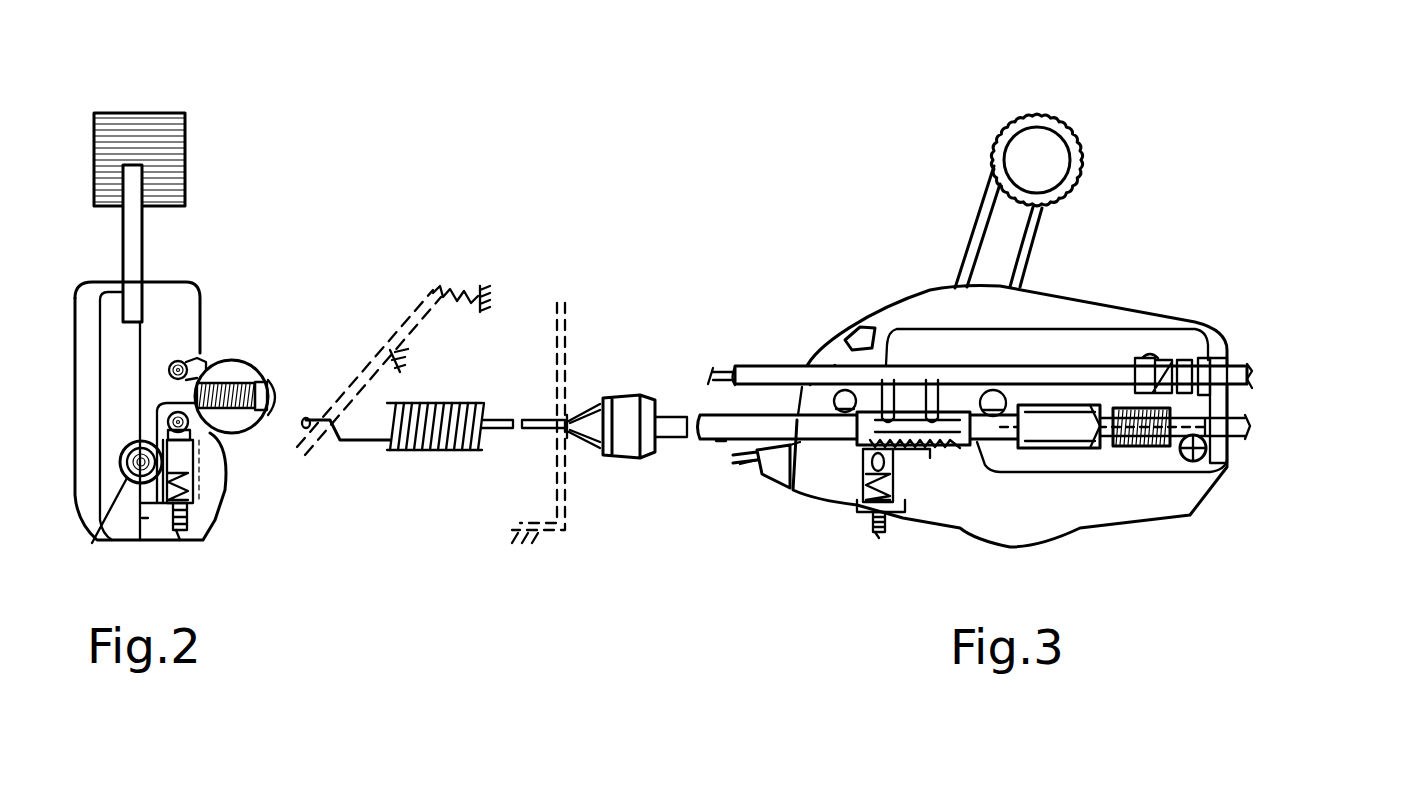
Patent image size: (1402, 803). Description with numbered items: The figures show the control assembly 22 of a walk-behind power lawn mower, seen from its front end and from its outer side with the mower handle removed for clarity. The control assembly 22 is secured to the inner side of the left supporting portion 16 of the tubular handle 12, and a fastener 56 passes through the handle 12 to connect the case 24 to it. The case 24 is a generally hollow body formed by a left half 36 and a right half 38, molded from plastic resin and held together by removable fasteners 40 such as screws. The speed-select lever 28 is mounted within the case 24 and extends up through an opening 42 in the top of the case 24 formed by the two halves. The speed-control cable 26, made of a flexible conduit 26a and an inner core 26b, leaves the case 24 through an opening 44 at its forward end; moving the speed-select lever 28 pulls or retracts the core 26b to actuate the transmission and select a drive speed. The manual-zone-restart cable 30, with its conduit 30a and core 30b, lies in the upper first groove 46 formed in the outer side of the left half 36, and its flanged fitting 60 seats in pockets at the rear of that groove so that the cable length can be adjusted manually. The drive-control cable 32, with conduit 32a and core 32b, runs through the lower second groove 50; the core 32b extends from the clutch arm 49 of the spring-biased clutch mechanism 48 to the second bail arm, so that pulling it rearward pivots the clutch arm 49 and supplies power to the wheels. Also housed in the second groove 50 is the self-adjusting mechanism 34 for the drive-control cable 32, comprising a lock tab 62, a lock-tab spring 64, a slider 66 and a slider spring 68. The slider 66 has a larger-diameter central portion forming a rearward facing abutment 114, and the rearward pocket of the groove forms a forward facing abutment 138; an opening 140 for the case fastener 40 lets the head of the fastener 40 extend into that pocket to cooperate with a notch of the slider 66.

In FIG. 2, the tubular handle 12 is at (262, 437).
In FIG. 2, the supporting portion 16 is at (256, 364).
In FIG. 3, the control assembly 22 is at (850, 203).
In FIG. 2, the case 24 is at (192, 276).
In FIG. 3, the case 24 is at (1177, 560).
In FIG. 2, the speed-control cable 26 is at (135, 482).
In FIG. 3, the speed-control cable 26 is at (766, 492).
In FIG. 3, the speed-control cable conduit 26a is at (772, 478).
In FIG. 3, the speed-control cable core 26b is at (748, 462).
In FIG. 2, the speed-select lever 28 is at (156, 112).
In FIG. 3, the speed-select lever 28 is at (975, 203).
In FIG. 2, the manual-zone-restart cable 30 is at (190, 338).
In FIG. 3, the manual-zone-restart cable 30 is at (786, 362).
In FIG. 3, the MRZ cable conduit 30a is at (750, 365).
In FIG. 3, the MRZ cable core 30b is at (722, 372).
In FIG. 2, the drive-control cable 32 is at (169, 370).
In FIG. 3, the drive-control cable 32 is at (705, 447).
In FIG. 3, the drive-control cable conduit 32a is at (721, 442).
In FIG. 3, the drive-control cable core 32b is at (552, 430).
In FIG. 2, the self-adjusting mechanism 34 is at (187, 532).
In FIG. 3, the self-adjusting mechanism 34 is at (869, 537).
In FIG. 2, the left half of case 36 is at (162, 298).
In FIG. 3, the left half of case 36 is at (1093, 502).
In FIG. 2, the right half of case 38 is at (96, 290).
In FIG. 3, the fastener 40 is at (1210, 462).
In FIG. 2, the opening 42 is at (128, 300).
In FIG. 2, the opening 44 is at (130, 450).
In FIG. 2, the first groove 46 is at (198, 350).
In FIG. 3, the first groove 46 is at (875, 328).
In FIG. 3, the clutch mechanism 48 is at (430, 360).
In FIG. 3, the clutch arm 49 is at (572, 400).
In FIG. 2, the second groove 50 is at (195, 428).
In FIG. 3, the second groove 50 is at (932, 395).
In FIG. 2, the fastener 56 is at (283, 398).
In FIG. 3, the flanged fitting 60 is at (1153, 392).
In FIG. 2, the lock tab 62 is at (184, 530).
In FIG. 3, the lock tab 62 is at (888, 535).
In FIG. 2, the lock-tab spring 64 is at (190, 498).
In FIG. 3, the lock-tab spring 64 is at (895, 490).
In FIG. 3, the slider 66 is at (888, 395).
In FIG. 3, the slider spring 68 is at (1150, 450).
In FIG. 3, the rearward facing abutment 114 is at (1112, 452).
In FIG. 3, the forward facing abutment 138 is at (1160, 400).
In FIG. 3, the opening 140 is at (1292, 488).